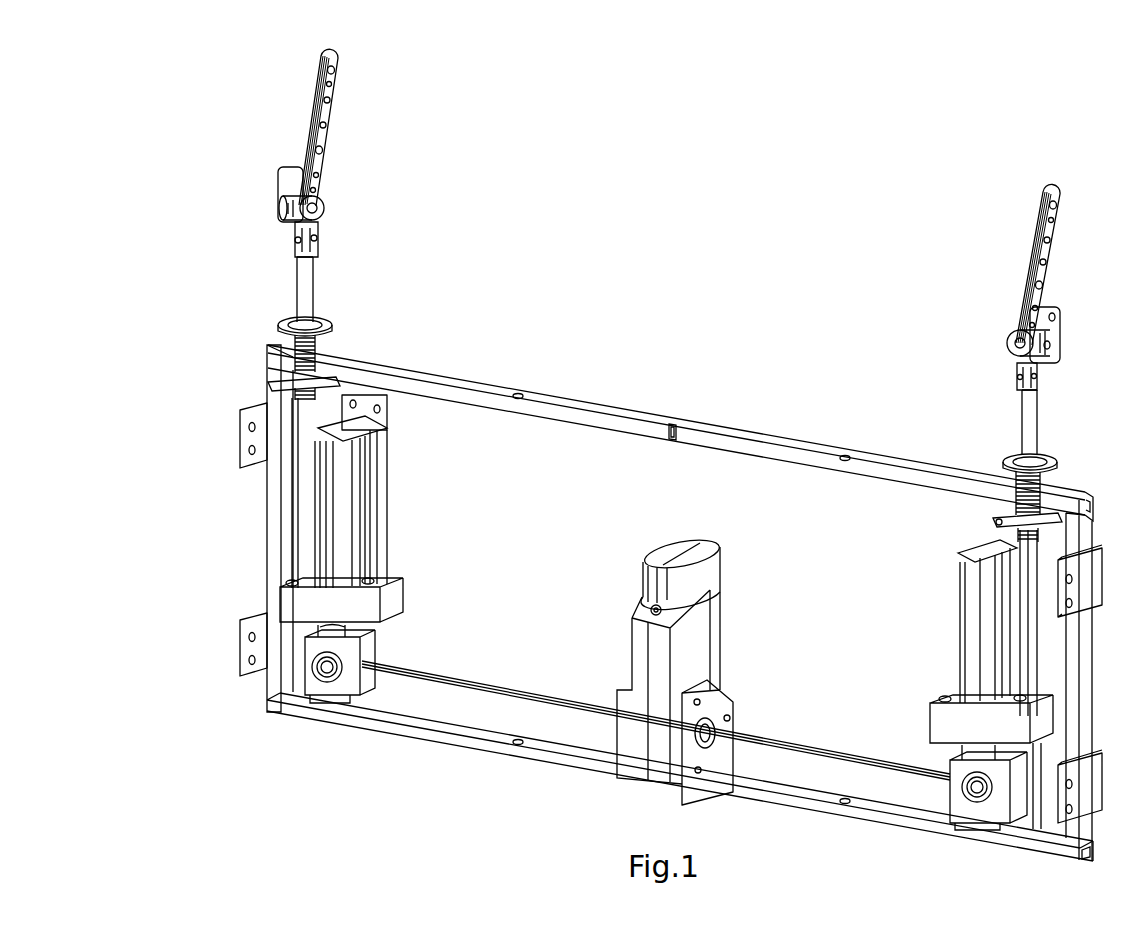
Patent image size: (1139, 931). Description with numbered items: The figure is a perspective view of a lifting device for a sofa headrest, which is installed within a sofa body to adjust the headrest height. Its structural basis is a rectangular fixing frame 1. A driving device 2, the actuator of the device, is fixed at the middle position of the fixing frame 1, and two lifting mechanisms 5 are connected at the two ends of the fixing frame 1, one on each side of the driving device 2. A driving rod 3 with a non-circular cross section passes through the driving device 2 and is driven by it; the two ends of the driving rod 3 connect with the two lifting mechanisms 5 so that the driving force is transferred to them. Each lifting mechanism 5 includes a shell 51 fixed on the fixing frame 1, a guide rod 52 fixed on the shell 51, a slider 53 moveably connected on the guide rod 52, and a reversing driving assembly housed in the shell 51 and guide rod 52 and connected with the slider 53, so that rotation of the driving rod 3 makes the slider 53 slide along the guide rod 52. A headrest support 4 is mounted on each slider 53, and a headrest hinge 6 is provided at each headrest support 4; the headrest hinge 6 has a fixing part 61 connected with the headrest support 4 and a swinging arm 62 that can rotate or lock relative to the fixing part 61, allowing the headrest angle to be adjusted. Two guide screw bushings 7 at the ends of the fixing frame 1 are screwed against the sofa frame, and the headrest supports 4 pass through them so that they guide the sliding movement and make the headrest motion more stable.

The fixing frame 1 is at (650, 419).
The driving device 2 is at (640, 648).
The driving rod 3 is at (848, 760).
The headrest support 4 is at (300, 277).
The lifting mechanism 5 is at (624, 636).
The shell 51 is at (325, 690).
The guide rod 52 is at (330, 468).
The slider 53 is at (395, 610).
The headrest hinge 6 is at (669, 219).
The fixing part 61 is at (932, 284).
The swinging arm 62 is at (1030, 278).
The guide screw bushing 7 is at (330, 325).